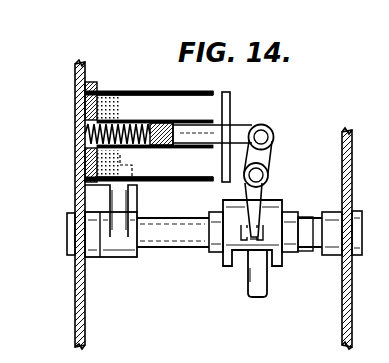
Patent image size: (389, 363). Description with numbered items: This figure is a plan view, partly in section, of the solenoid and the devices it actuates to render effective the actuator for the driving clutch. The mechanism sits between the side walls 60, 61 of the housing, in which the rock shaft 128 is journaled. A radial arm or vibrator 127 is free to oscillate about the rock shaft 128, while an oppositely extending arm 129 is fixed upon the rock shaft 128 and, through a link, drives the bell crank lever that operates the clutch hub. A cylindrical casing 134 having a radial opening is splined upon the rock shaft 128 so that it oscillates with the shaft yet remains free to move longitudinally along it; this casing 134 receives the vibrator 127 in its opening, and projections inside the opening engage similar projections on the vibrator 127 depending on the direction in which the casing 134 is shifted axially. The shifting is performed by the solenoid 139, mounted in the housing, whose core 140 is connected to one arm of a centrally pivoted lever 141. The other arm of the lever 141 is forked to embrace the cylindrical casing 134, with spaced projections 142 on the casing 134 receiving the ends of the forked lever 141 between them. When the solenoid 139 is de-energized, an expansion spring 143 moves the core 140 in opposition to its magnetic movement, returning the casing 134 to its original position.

The side wall 60 is at (78, 291).
The side wall 61 is at (353, 289).
The radial arm or vibrator 127 is at (263, 283).
The rock shaft 128 is at (183, 239).
The arm 129 is at (121, 204).
The cylindrical casing 134 is at (281, 209).
The solenoid 139 is at (170, 91).
The core 140 is at (216, 134).
The centrally pivoted lever 141 is at (268, 170).
The spaced projections 142 is at (260, 233).
The expansion spring 143 is at (85, 142).